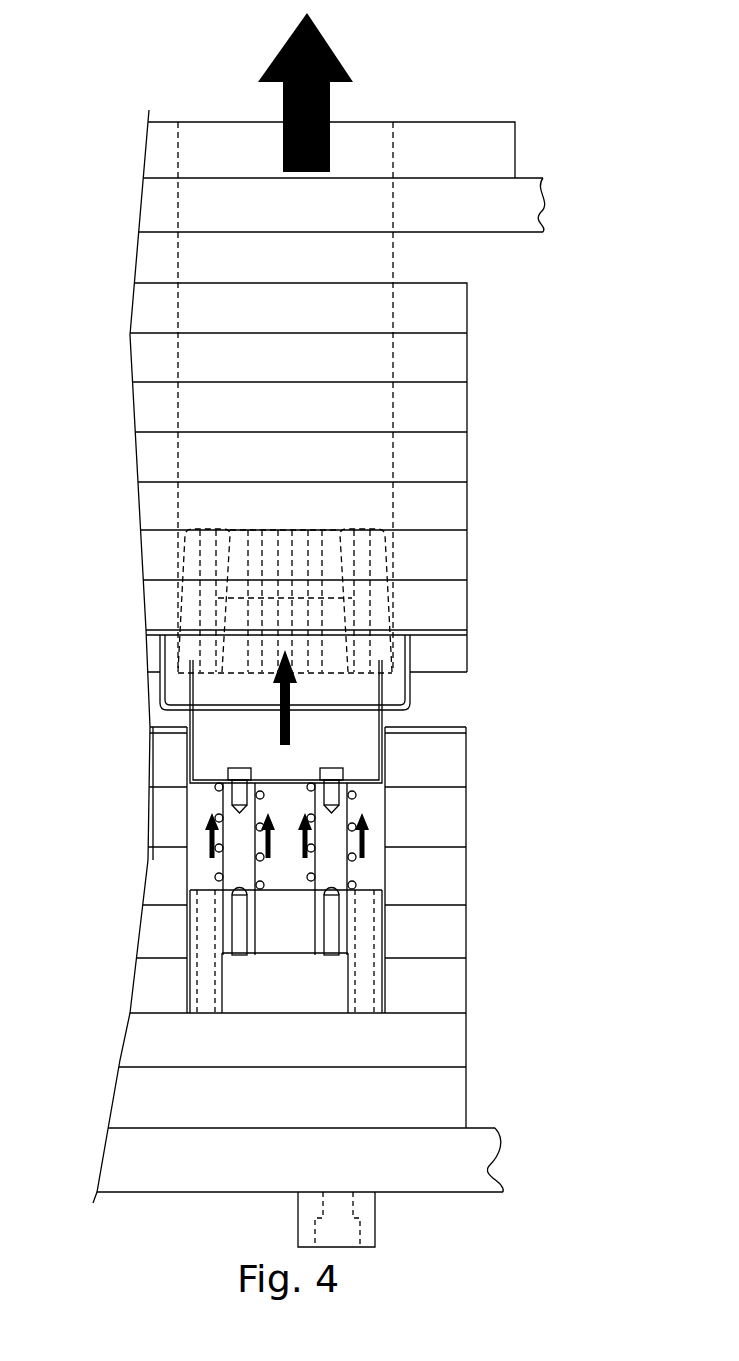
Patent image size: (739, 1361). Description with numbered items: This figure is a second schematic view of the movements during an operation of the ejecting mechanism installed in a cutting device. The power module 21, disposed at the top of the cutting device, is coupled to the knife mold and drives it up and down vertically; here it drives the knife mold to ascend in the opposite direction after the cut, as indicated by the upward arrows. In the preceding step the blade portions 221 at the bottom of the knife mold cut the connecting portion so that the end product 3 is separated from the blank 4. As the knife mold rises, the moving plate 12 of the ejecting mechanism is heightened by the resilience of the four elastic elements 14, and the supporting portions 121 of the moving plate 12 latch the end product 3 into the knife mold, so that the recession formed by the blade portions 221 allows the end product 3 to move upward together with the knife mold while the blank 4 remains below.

The power module 21 is at (330, 97).
The end product 3 is at (372, 560).
The blade portions 221 is at (410, 689).
The blank 4 is at (402, 725).
The supporting portions 121 is at (383, 762).
The moving plate 12 is at (207, 783).
The elastic elements 14 is at (353, 797).